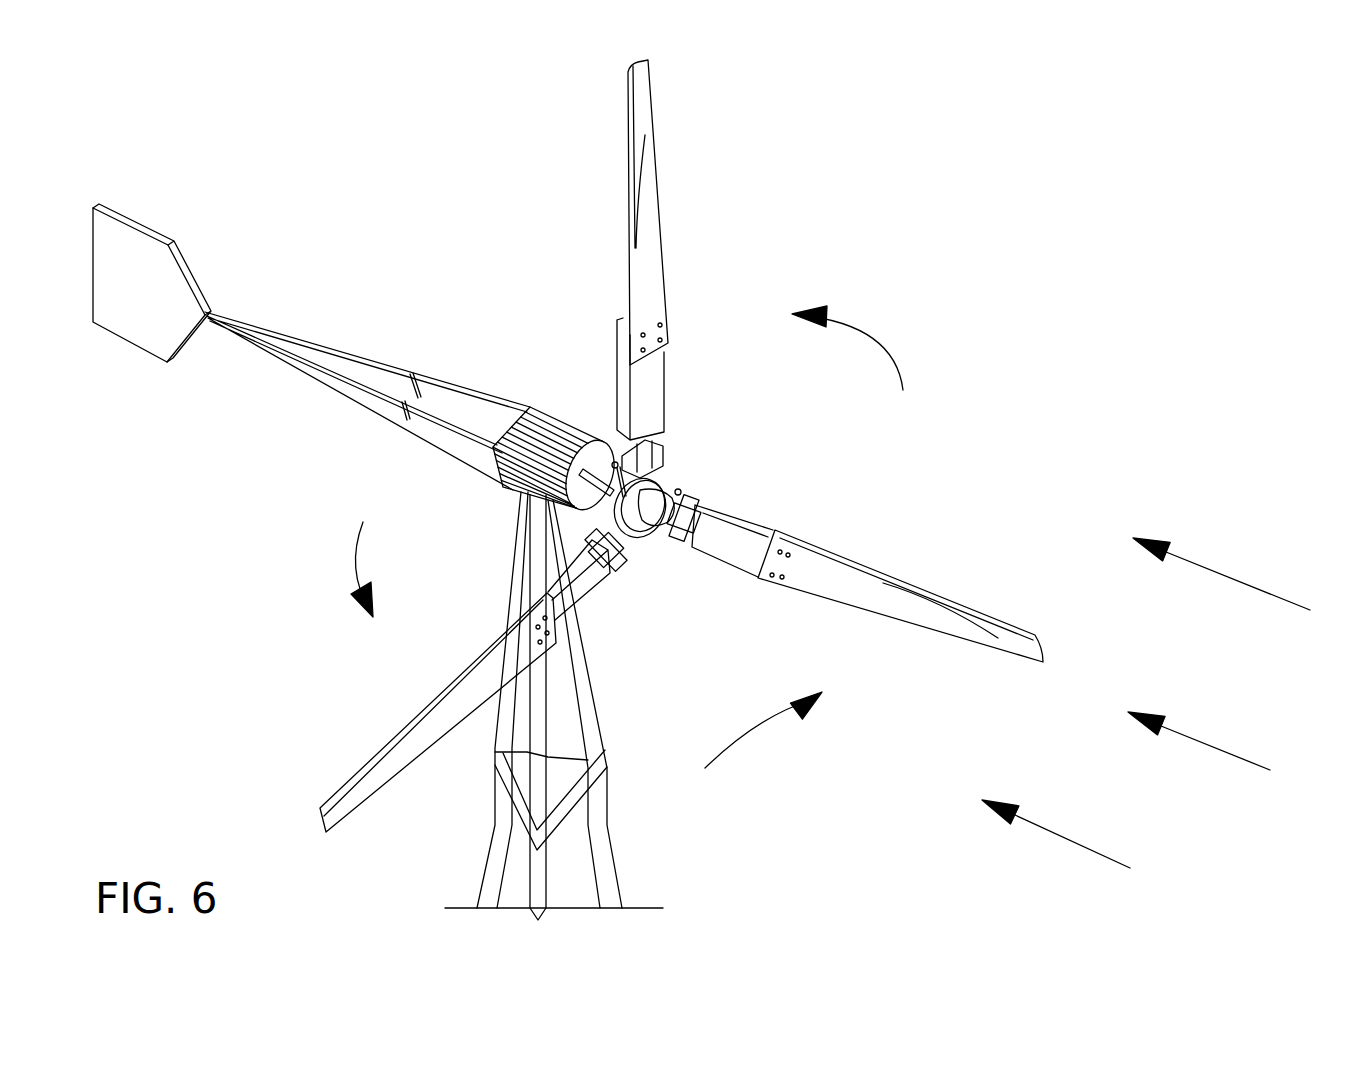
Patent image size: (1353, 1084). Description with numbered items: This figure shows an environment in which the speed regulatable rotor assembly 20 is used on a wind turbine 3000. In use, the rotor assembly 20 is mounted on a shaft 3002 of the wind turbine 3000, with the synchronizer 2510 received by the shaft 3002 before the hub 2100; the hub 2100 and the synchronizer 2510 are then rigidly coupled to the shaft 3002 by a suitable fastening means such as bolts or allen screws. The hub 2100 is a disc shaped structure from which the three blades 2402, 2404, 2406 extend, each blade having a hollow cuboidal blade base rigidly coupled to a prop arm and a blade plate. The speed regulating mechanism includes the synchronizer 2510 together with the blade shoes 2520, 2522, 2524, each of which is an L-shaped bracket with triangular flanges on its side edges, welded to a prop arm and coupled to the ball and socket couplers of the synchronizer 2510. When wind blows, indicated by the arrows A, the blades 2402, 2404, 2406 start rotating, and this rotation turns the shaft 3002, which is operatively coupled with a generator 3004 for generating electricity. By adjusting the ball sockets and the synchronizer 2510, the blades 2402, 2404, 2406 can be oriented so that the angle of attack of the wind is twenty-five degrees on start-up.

The rotor assembly 20 is at (760, 236).
The wind turbine 3000 is at (440, 316).
The shaft 3002 is at (612, 503).
The generator 3004 is at (513, 450).
The synchronizer 2510 is at (615, 462).
The hub 2100 is at (652, 530).
The blade shoe 2520 is at (666, 462).
The blade shoe 2522 is at (628, 562).
The blade shoe 2524 is at (686, 497).
The blade 2402 is at (612, 292).
The blade 2404 is at (425, 683).
The blade 2406 is at (990, 600).